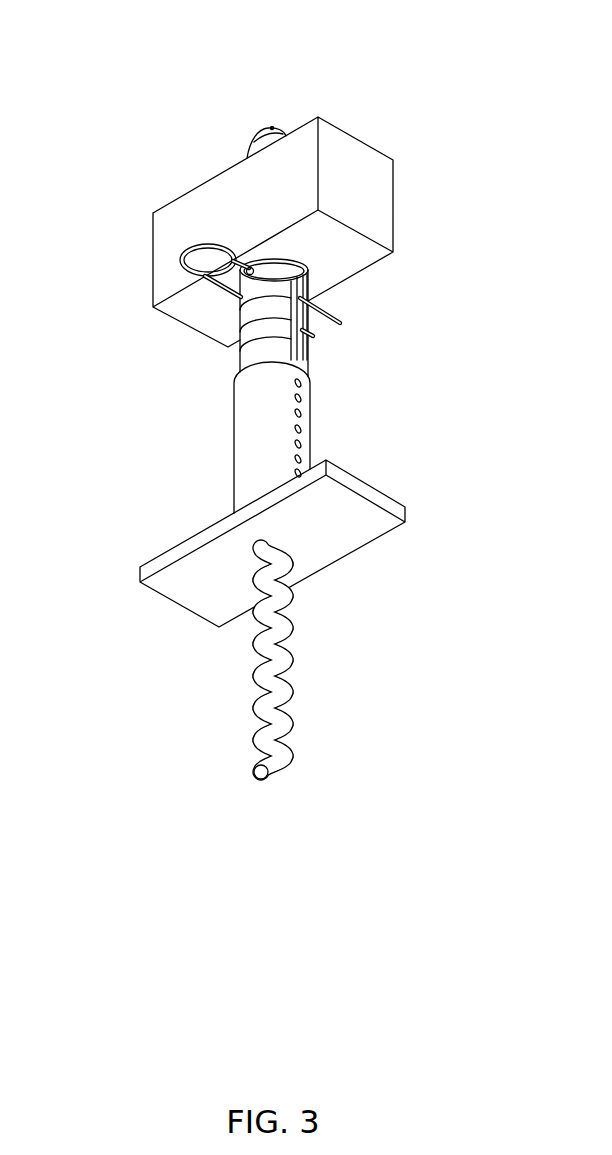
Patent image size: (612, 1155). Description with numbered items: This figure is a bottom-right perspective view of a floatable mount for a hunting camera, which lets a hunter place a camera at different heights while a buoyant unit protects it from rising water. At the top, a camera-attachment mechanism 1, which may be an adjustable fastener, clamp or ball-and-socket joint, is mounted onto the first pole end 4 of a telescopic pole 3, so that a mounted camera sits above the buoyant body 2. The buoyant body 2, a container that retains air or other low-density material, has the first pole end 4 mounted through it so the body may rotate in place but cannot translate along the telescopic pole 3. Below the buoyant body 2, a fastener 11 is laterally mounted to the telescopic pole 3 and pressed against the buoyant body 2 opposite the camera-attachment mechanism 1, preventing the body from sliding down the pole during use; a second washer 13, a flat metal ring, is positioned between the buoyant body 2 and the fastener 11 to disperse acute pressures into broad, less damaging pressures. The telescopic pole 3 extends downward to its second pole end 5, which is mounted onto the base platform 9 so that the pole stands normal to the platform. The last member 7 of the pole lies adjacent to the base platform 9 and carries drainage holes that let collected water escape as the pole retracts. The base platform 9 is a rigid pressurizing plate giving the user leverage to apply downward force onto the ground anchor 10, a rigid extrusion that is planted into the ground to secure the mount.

The camera-attachment mechanism 1 is at (266, 128).
The buoyant body 2 is at (182, 210).
The telescopic pole 3 is at (246, 389).
The first pole end 4 is at (323, 337).
The second pole end 5 is at (320, 443).
The last member 7 is at (272, 454).
The base platform 9 is at (167, 560).
The ground anchor 10 is at (265, 735).
The fastener 11 is at (180, 270).
The second washer 13 is at (313, 262).